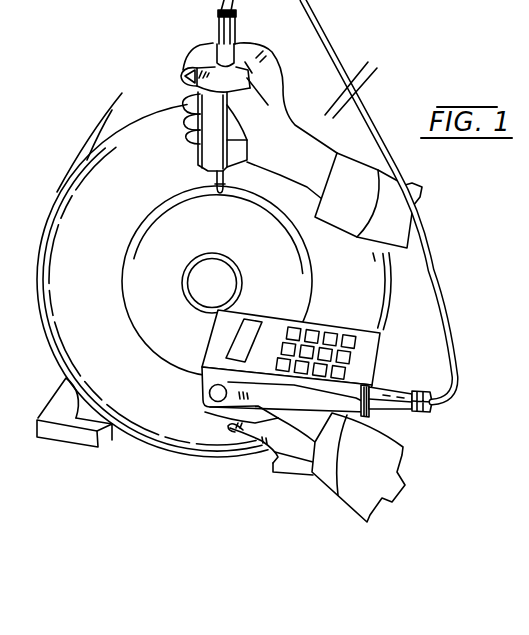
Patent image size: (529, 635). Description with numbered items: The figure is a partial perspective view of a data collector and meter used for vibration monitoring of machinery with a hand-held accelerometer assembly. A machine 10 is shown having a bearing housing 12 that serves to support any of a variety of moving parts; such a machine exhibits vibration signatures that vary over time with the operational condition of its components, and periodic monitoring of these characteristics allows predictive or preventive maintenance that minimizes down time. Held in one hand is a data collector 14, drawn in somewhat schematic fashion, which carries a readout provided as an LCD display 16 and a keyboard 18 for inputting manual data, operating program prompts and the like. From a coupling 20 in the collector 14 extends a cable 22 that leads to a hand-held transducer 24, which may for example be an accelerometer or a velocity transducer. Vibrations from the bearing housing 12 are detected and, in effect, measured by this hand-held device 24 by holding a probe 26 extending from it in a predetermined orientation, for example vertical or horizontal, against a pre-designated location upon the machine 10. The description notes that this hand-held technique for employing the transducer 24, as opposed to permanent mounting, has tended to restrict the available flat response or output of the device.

The machine 10 is at (102, 119).
The bearing housing 12 is at (181, 203).
The data collector 14 is at (317, 346).
The LCD display 16 is at (249, 333).
The keyboard 18 is at (323, 352).
The coupling 20 is at (404, 410).
The cable 22 is at (449, 298).
The hand-held transducer 24 is at (217, 149).
The probe 26 is at (228, 186).